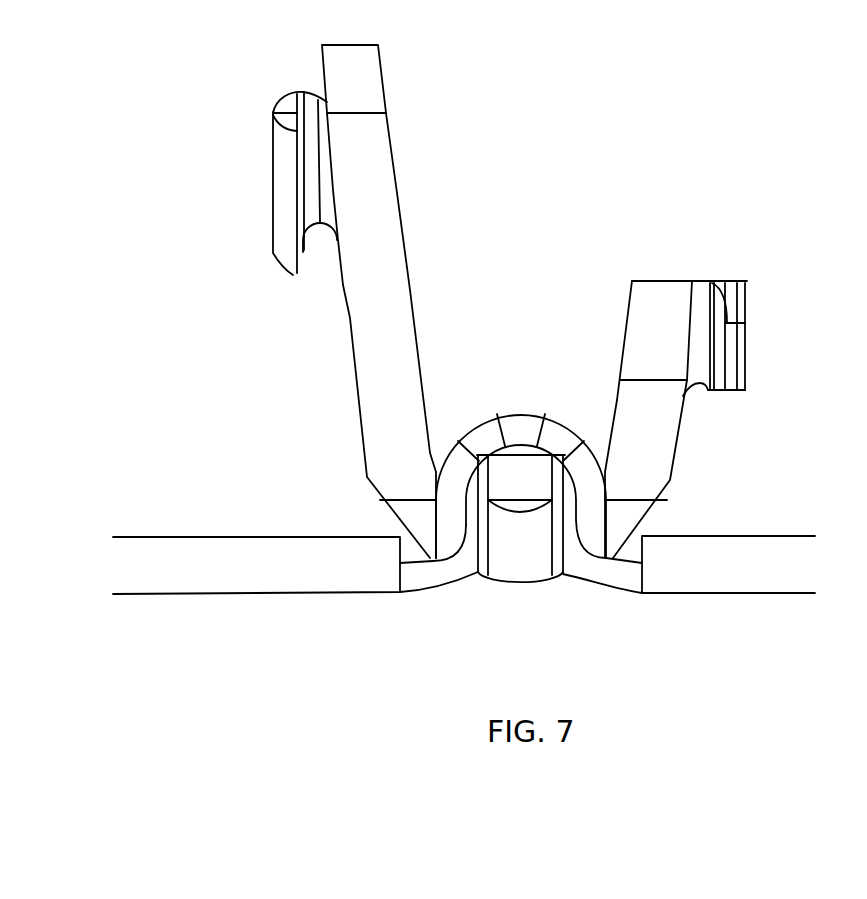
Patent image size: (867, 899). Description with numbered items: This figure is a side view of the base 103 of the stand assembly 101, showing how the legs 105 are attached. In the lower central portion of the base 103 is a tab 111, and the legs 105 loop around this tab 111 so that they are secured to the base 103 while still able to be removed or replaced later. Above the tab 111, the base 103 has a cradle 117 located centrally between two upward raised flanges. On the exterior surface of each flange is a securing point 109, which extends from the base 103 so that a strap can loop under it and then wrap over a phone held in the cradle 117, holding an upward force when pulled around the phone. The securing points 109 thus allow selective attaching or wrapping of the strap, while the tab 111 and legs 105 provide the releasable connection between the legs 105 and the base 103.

The stand assembly 101 is at (394, 622).
The base 103 is at (415, 330).
The legs 105 is at (507, 423).
The securing point 109 is at (303, 252).
The tab 111 is at (523, 480).
The cradle 117 is at (550, 284).